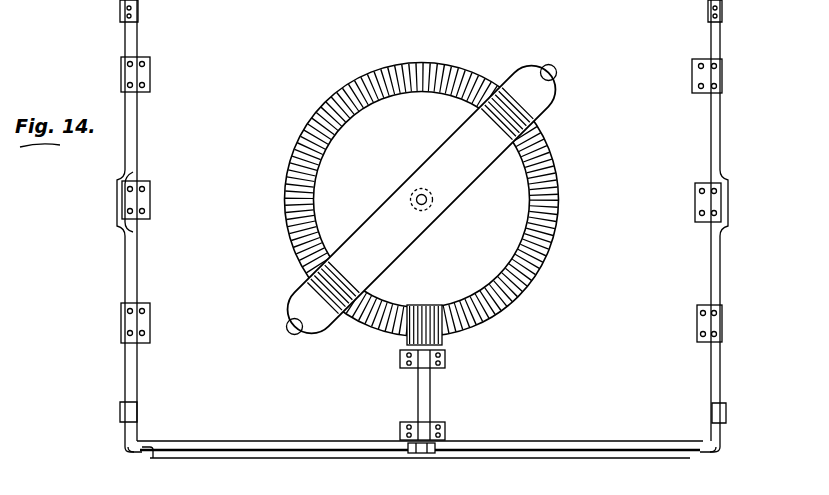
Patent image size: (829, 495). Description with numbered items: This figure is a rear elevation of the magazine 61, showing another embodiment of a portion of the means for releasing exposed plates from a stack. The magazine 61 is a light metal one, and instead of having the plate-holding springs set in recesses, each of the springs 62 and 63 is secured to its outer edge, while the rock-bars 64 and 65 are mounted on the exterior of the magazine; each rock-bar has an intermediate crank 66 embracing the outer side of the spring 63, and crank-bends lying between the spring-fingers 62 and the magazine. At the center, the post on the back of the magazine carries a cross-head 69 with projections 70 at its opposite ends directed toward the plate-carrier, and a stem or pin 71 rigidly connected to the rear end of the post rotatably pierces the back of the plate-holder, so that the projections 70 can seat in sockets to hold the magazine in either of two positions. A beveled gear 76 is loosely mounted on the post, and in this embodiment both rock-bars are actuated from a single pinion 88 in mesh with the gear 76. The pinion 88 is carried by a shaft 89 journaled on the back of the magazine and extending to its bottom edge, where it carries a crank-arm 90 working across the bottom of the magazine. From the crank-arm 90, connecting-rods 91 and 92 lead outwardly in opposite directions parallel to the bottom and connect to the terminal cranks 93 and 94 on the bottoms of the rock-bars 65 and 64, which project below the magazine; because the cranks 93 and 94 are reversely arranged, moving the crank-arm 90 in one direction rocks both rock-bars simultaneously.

The magazine 61 is at (687, 382).
The spring-fingers 62 is at (121, 73).
The spring 63 is at (150, 197).
The rock-bar 64 is at (718, 265).
The rock-bar 65 is at (127, 264).
The intermediate crank 66 is at (118, 198).
The cross-head 69 is at (422, 200).
The projections 70 is at (548, 72).
The stem or pin 71 is at (426, 200).
The beveled gear 76 is at (556, 240).
The pinion 88 is at (438, 332).
The shaft 89 is at (428, 395).
The crank-arm 90 is at (440, 448).
The connecting-rod 91 is at (277, 457).
The connecting-rod 92 is at (556, 455).
The terminal crank 93 is at (132, 453).
The terminal crank 94 is at (706, 453).